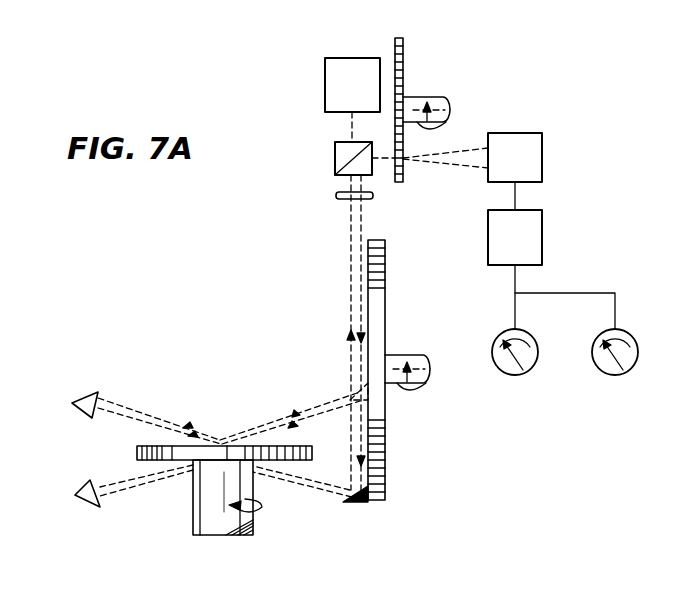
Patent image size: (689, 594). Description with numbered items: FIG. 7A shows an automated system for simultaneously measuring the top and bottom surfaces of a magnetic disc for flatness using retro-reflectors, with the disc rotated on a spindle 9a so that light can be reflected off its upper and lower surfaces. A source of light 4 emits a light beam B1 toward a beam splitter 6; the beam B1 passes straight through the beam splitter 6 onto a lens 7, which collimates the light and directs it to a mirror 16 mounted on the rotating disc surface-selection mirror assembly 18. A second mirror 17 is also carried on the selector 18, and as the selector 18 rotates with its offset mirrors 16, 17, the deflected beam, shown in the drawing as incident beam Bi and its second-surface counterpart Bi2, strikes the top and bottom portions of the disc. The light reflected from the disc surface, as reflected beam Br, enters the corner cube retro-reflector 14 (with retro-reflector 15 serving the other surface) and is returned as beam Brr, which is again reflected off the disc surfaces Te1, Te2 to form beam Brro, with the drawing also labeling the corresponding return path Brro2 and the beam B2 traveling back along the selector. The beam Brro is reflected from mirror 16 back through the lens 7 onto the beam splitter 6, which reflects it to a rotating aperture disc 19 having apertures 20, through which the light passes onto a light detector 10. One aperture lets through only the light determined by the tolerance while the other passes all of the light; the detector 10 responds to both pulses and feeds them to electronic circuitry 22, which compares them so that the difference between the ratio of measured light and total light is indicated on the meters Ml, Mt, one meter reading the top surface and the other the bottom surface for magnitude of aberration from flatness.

The source of light 4 is at (325, 65).
The beam splitter 6 is at (335, 148).
The lens 7 is at (340, 194).
The spindle 9a is at (213, 520).
The light detector 10 is at (538, 147).
The corner cube retro-reflector 14 is at (72, 403).
The retro-reflector 15 is at (73, 494).
The mirror 16 is at (347, 383).
The mirror 17 is at (350, 510).
The rotating disc surface-selection mirror assembly 18 is at (386, 268).
The rotating aperture disc 19 is at (403, 58).
The apertures 20 is at (420, 150).
The electronic circuitry 22 is at (528, 240).
The light beam B1 is at (350, 119).
The beam B2 is at (360, 305).
The incident beam Bi is at (312, 408).
The incident beam Bi2 is at (362, 432).
The reflected beam Br is at (126, 421).
The beam Brr is at (135, 408).
The beam Brro is at (351, 305).
The reflected beam Brro2 is at (300, 410).
The surface Te1 is at (221, 428).
The surface Te2 is at (210, 470).
The meter Ml is at (530, 371).
The meter Mt is at (603, 371).